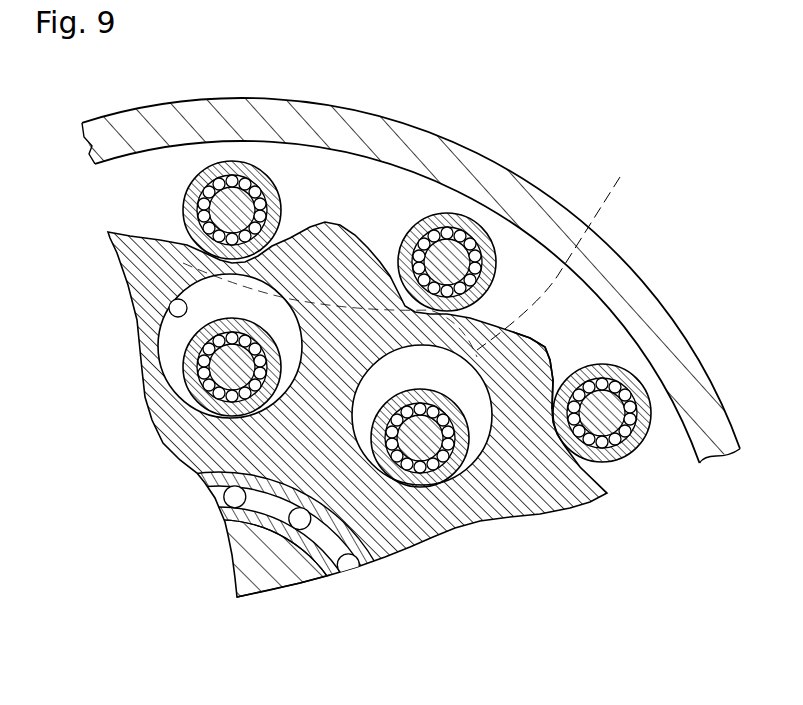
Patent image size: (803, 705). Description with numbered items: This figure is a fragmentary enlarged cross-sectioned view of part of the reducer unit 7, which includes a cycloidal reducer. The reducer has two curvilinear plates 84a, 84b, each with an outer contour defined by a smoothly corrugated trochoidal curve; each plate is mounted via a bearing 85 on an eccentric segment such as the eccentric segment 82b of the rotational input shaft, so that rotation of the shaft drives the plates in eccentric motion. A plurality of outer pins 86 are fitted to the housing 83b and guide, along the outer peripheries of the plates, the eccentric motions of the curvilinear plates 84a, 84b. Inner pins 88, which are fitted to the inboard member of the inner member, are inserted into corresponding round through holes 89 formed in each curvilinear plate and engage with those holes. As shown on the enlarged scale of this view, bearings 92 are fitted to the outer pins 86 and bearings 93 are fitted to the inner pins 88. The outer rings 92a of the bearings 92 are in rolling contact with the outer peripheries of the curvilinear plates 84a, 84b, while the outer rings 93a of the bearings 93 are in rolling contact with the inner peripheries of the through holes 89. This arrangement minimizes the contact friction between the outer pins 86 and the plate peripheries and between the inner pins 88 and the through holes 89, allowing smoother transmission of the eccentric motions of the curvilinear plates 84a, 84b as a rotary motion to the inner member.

The reducer unit 7 is at (411, 249).
The housing 83b is at (228, 110).
The outer pins 86 is at (366, 173).
The bearings 92 is at (467, 240).
The outer rings 92a is at (477, 246).
The curvilinear plate 84a is at (562, 251).
The curvilinear plate 84b is at (545, 350).
The through holes 89 is at (160, 318).
The outer rings 93a is at (192, 345).
The bearings 93 is at (170, 372).
The inner pins 88 is at (207, 394).
The eccentric segment 82b is at (277, 567).
The bearings 85 is at (350, 572).